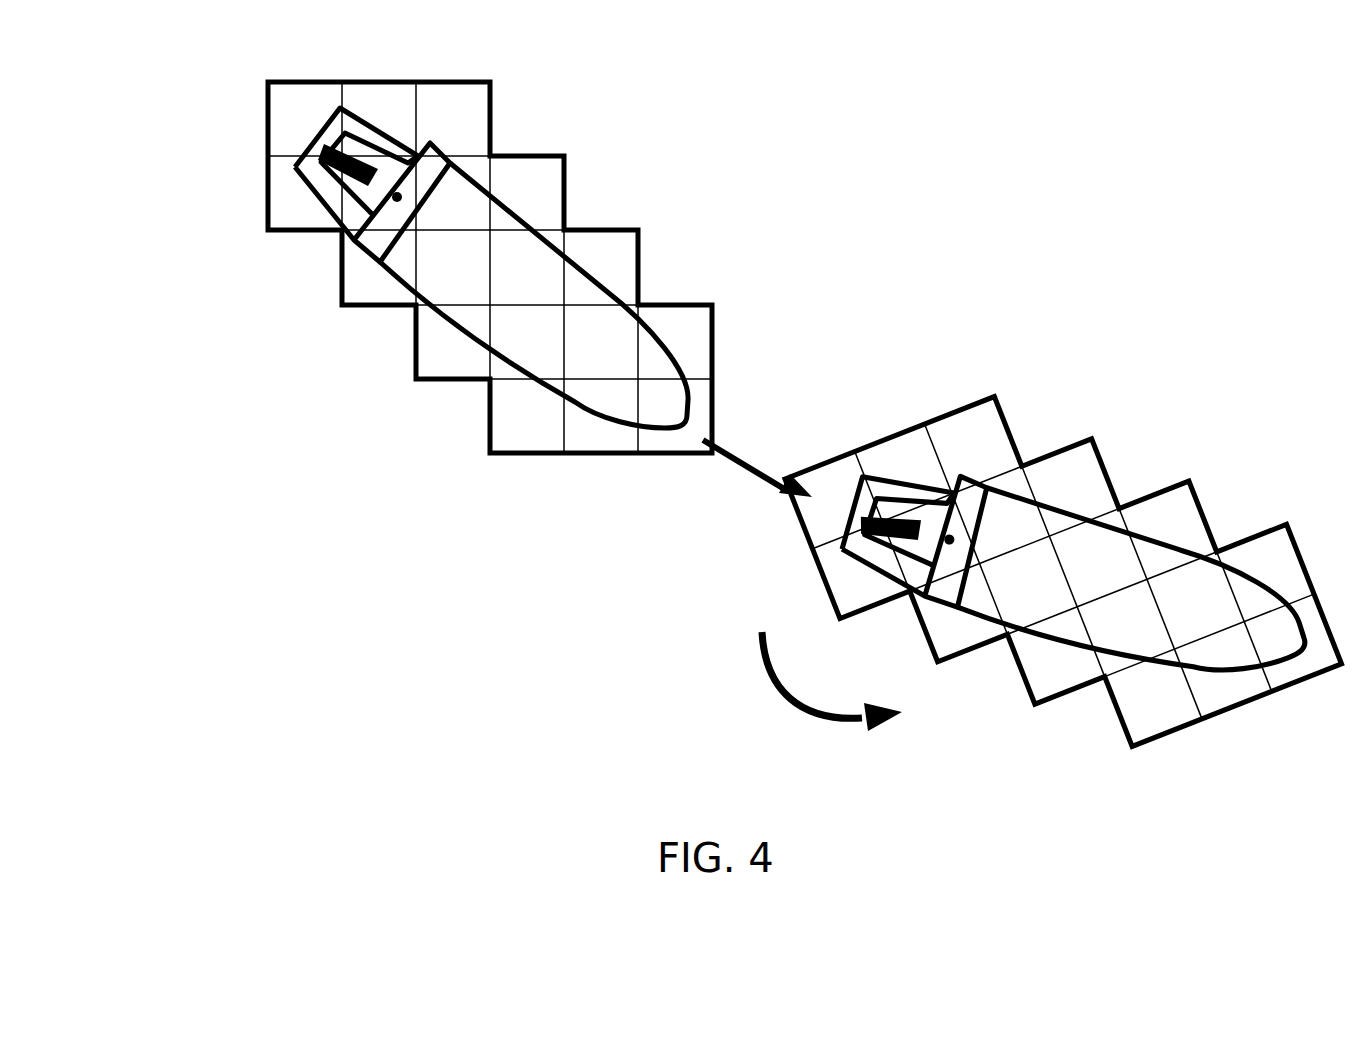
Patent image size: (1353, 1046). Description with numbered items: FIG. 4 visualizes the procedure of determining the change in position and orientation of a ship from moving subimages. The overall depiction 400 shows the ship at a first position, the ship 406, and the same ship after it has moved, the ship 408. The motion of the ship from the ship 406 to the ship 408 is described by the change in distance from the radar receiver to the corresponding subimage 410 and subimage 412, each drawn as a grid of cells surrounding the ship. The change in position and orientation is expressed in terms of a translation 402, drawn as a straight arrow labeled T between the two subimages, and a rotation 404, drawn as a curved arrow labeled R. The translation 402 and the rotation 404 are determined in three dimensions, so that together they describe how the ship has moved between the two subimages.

The image registration example 400 is at (165, 88).
The translation 402 is at (773, 417).
The rotation 404 is at (752, 735).
The ship 406 is at (467, 328).
The ship 408 is at (1190, 530).
The subimage 410 is at (493, 122).
The subimage 412 is at (1013, 425).